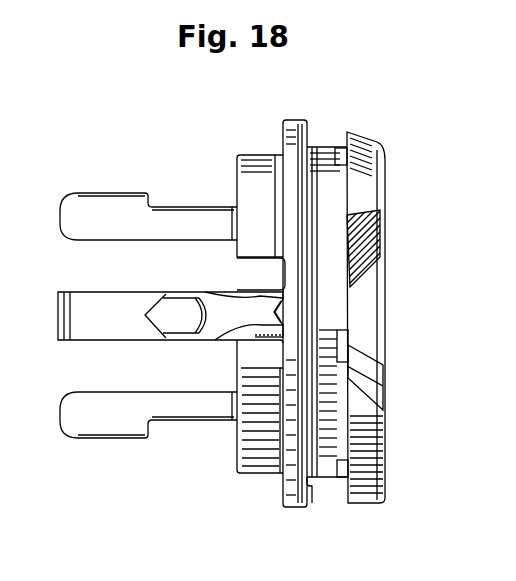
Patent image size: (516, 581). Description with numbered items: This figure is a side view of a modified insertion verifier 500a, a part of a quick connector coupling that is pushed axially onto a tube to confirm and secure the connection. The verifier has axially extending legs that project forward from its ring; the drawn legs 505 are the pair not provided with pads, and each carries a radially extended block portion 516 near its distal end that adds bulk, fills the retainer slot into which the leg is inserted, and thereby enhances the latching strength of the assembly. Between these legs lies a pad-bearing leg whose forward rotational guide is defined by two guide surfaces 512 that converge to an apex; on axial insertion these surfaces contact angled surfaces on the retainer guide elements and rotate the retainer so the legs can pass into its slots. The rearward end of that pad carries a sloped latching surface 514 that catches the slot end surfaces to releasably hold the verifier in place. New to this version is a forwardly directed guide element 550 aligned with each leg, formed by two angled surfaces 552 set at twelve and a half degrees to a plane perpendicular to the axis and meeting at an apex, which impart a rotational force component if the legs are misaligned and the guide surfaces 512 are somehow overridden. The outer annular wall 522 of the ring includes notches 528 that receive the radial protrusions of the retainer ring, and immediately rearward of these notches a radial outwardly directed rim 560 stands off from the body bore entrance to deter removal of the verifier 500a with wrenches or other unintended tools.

The insertion verifier 500a is at (0, 18).
The leg 505 is at (75, 212).
The block portion 516 is at (124, 204).
The guide surface 512 is at (152, 303).
The latching surface 514 is at (188, 292).
The angled surface 552 is at (253, 298).
The outer annular wall 522 is at (217, 323).
The notch 528 is at (273, 277).
The guide element 550 is at (283, 312).
The rim 560 is at (283, 120).